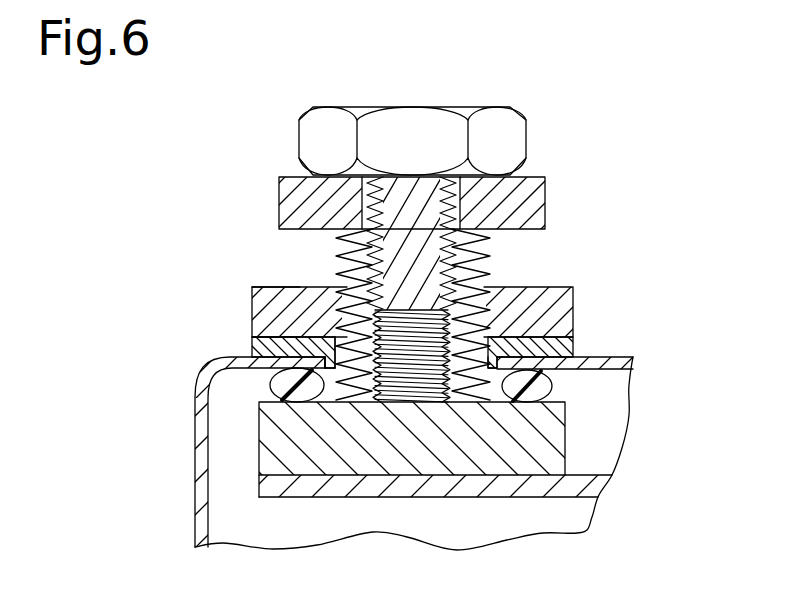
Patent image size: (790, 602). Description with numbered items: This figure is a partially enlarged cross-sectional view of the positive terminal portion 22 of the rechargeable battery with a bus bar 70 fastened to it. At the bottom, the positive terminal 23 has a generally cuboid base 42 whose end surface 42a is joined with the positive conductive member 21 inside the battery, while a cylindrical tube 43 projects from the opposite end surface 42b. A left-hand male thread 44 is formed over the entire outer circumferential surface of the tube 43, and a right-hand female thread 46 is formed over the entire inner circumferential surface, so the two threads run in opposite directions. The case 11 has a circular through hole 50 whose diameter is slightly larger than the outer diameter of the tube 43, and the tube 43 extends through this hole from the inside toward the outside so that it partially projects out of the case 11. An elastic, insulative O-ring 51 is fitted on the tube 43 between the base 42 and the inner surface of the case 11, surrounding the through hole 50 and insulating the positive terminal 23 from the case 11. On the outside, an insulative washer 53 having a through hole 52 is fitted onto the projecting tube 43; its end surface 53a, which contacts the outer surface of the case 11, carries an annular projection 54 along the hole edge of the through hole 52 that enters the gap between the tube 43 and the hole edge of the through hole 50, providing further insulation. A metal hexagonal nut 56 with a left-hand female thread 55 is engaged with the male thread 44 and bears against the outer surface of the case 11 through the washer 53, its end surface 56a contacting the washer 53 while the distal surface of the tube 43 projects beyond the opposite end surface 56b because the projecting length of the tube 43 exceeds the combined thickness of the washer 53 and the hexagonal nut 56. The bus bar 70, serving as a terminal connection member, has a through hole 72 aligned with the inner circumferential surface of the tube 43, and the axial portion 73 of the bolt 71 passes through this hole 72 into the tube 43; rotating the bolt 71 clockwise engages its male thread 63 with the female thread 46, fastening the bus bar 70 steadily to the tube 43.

The case 11 is at (616, 357).
The positive conductive member 21 is at (302, 488).
The positive terminal portion 22 is at (612, 158).
The positive terminal 23 is at (263, 432).
The base 42 is at (560, 434).
The end surface 42a is at (442, 480).
The end surface 42b is at (552, 397).
The tube 43 is at (484, 262).
The male thread 44 is at (341, 262).
The female thread 46 is at (433, 405).
The through hole 50 is at (498, 368).
The O-ring 51 is at (275, 388).
The through hole 52 is at (364, 368).
The washer 53 is at (253, 342).
The end surface 53a is at (252, 372).
The annular projection 54 is at (327, 368).
The female thread 55 is at (484, 307).
The hexagonal nut 56 is at (395, 301).
The end surface 56a is at (267, 328).
The end surface 56b is at (298, 286).
The male thread 63 is at (373, 208).
The bus bar 70 is at (537, 213).
The bolt 71 is at (436, 117).
The through hole 72 is at (366, 170).
The axial portion 73 is at (394, 188).